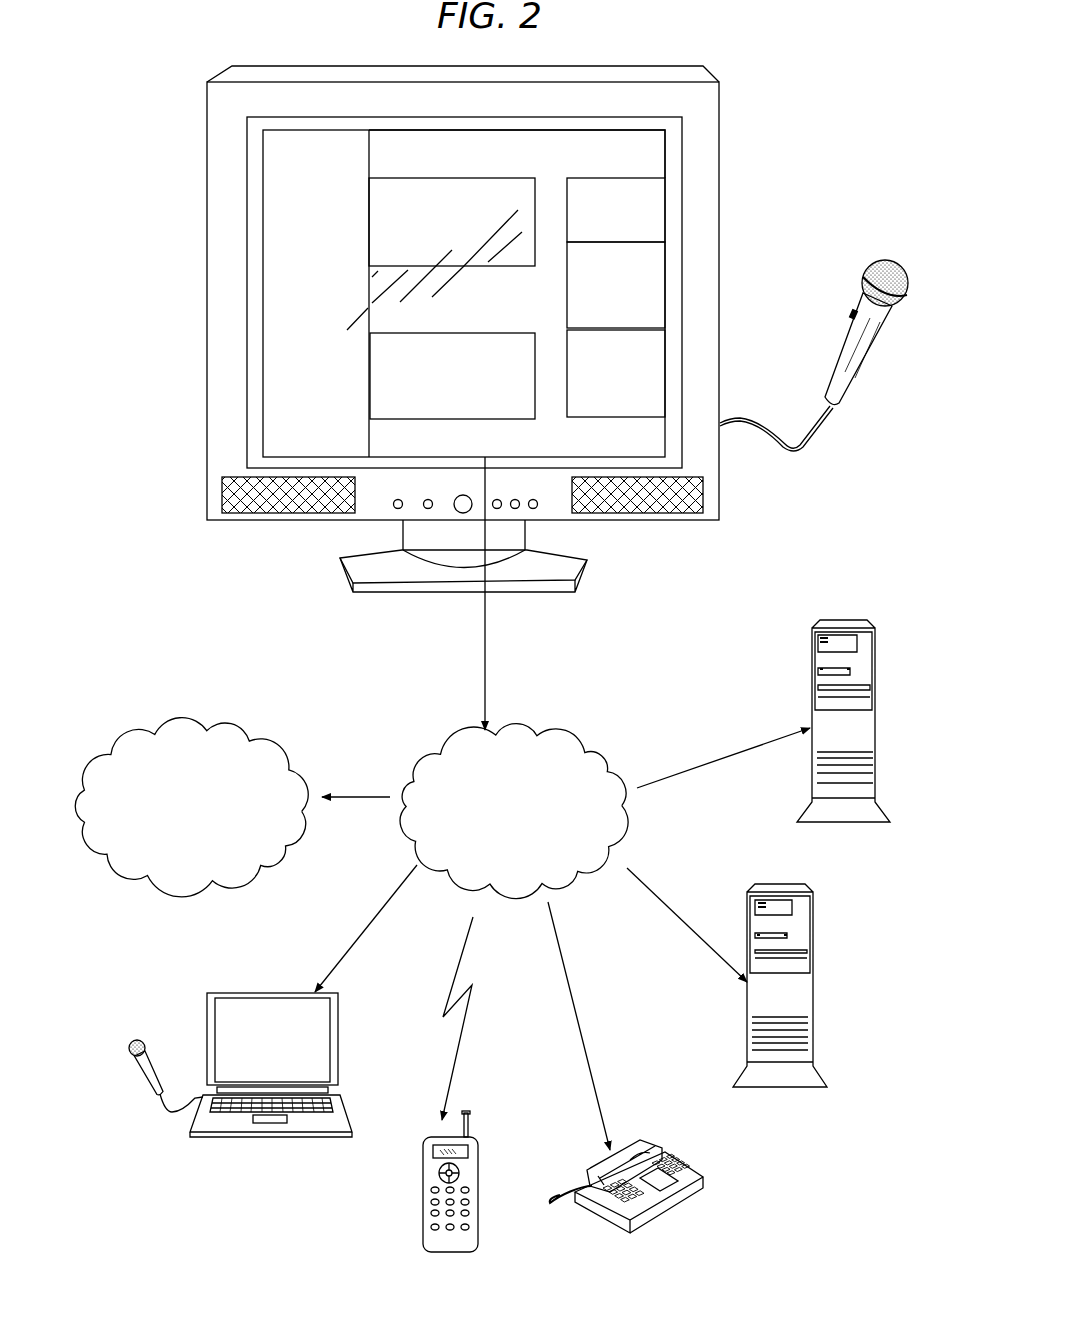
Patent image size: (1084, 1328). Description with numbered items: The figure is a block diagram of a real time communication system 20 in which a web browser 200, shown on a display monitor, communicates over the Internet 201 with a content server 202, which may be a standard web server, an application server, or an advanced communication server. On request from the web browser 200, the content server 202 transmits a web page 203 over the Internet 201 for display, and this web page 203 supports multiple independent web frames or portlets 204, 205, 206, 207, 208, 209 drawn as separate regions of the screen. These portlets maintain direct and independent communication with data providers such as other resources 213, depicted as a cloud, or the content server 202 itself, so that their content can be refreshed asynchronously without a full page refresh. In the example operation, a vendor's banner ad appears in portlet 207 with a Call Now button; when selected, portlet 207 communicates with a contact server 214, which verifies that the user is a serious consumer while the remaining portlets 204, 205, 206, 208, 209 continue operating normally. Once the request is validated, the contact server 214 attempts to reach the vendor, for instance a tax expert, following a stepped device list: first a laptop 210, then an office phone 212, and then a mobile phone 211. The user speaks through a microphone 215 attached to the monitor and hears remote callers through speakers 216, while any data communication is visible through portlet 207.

The real time communication system 20 is at (143, 657).
The web browser 200 is at (665, 155).
The Internet 201 is at (542, 849).
The content server 202 is at (812, 663).
The web page 203 is at (412, 157).
The portlet 204 is at (305, 157).
The portlet 205 is at (412, 209).
The portlet 206 is at (412, 361).
The portlet 207 is at (609, 209).
The portlet 208 is at (609, 272).
The portlet 209 is at (609, 361).
The laptop 210 is at (250, 1138).
The mobile phone 211 is at (423, 1218).
The office phone 212 is at (668, 1217).
The other resources 213 is at (212, 855).
The contact server 214 is at (813, 988).
The microphone 215 is at (860, 303).
The speakers 216 is at (222, 483).